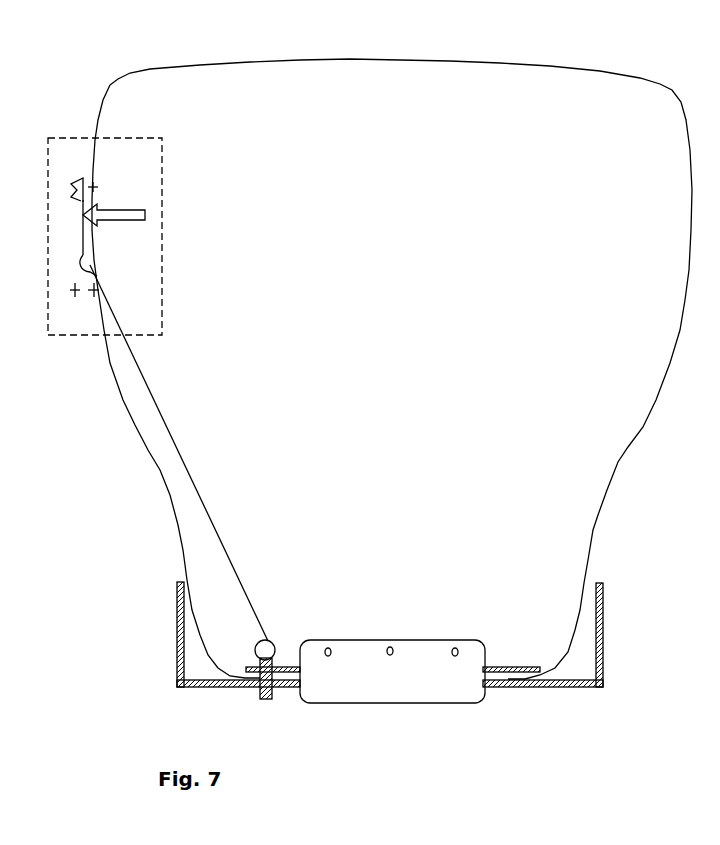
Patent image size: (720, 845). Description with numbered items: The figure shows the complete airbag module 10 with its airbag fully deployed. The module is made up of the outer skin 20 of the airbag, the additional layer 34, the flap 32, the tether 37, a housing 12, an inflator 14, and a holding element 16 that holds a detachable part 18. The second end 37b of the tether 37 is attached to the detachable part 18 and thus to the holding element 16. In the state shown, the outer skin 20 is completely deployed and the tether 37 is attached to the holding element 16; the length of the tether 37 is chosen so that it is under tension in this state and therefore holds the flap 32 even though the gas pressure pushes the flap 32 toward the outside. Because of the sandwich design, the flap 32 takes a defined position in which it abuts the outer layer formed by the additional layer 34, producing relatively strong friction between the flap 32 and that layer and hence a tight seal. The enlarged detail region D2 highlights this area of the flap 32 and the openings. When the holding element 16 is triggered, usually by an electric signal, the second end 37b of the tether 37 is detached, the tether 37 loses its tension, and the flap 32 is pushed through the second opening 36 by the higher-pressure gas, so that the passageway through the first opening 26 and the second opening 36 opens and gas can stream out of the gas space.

The airbag module 10 is at (417, 693).
The housing 12 is at (583, 687).
The inflator 14 is at (473, 683).
The holding element 16 is at (262, 693).
The detachable part 18 is at (273, 652).
The outer skin 20 is at (190, 67).
The first opening 26 is at (83, 265).
The flap 32 is at (85, 213).
The additional layer 34 is at (85, 187).
The second opening 36 is at (78, 232).
The tether 37 is at (178, 455).
The second end of the tether 37b is at (256, 643).
The detail region D2 is at (73, 138).